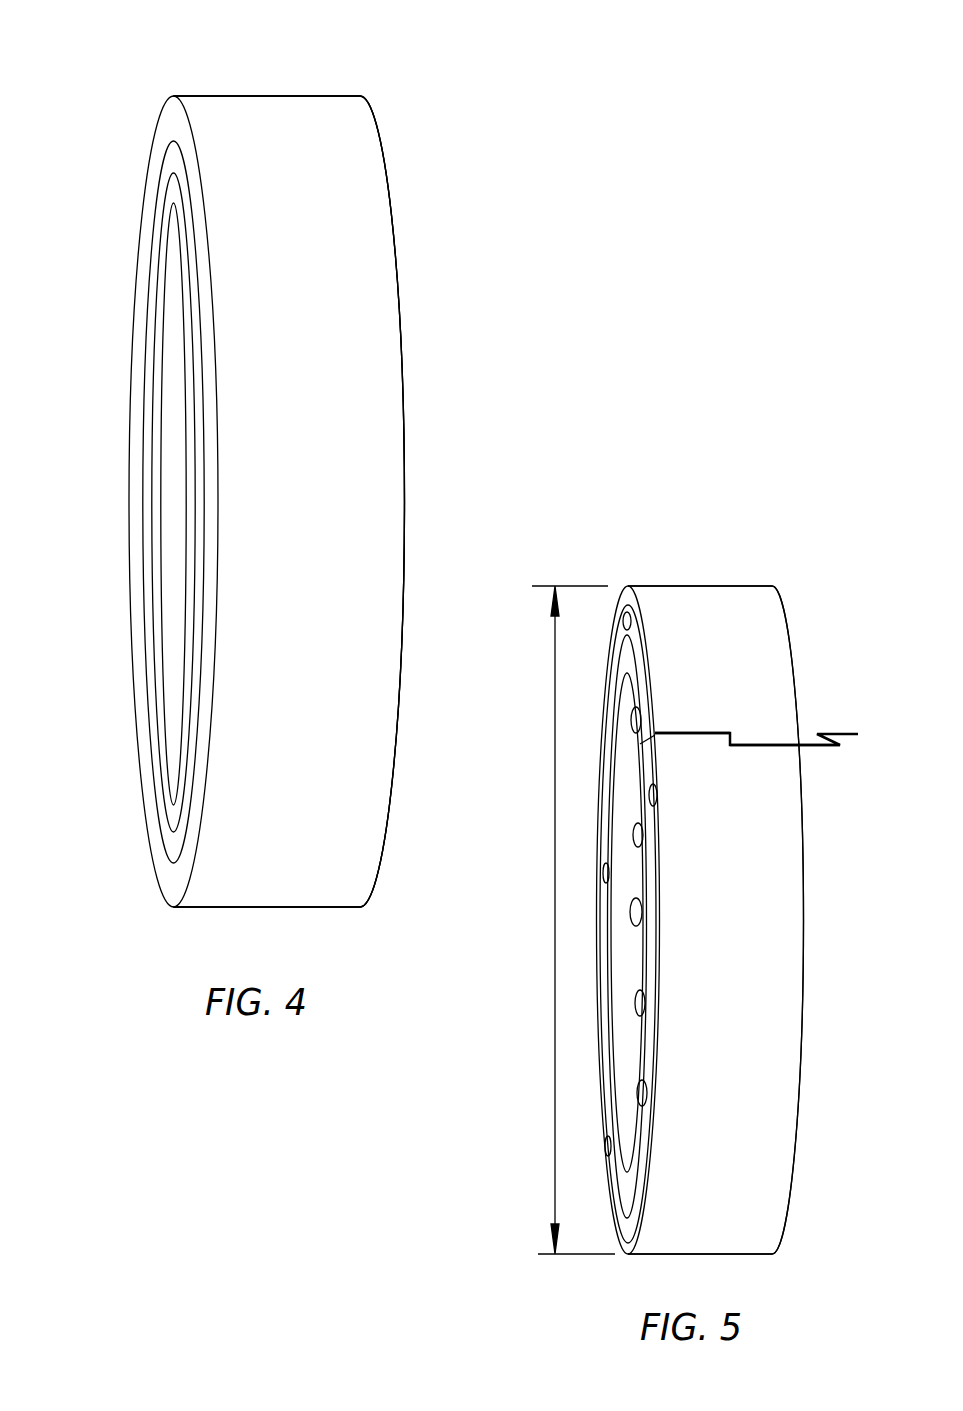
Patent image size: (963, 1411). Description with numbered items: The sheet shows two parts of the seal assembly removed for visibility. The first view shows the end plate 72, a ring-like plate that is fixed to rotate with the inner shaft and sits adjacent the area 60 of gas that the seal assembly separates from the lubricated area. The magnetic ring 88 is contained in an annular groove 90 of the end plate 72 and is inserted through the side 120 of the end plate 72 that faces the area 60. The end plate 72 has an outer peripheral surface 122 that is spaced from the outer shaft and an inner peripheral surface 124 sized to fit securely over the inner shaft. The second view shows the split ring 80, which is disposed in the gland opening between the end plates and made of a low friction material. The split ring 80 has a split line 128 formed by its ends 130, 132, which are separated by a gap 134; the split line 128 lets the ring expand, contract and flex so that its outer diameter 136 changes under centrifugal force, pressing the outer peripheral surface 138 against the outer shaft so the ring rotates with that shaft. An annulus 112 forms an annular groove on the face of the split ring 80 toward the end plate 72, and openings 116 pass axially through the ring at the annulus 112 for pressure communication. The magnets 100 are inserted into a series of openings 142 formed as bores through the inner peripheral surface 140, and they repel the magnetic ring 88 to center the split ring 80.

In FIG. 4, the area 60 is at (85, 338).
In FIG. 4, the end plate 72 is at (405, 297).
In FIG. 4, the magnetic ring 88 is at (155, 258).
In FIG. 4, the annular groove 90 is at (178, 145).
In FIG. 4, the side 120 is at (140, 752).
In FIG. 4, the outer peripheral surface 122 is at (265, 93).
In FIG. 4, the inner peripheral surface 124 is at (174, 478).
In FIG. 5, the split ring 80 is at (792, 640).
In FIG. 5, the magnet 100 is at (642, 838).
In FIG. 5, the annulus 112 is at (645, 685).
In FIG. 5, the opening 116 is at (631, 622).
In FIG. 5, the split line 128 is at (777, 747).
In FIG. 5, the end 130 is at (693, 733).
In FIG. 5, the end 132 is at (673, 735).
In FIG. 5, the gap 134 is at (778, 729).
In FIG. 5, the outer diameter 136 is at (556, 962).
In FIG. 5, the outer peripheral surface 138 is at (713, 578).
In FIG. 5, the inner peripheral surface 140 is at (612, 864).
In FIG. 5, the openings 142 is at (648, 1005).